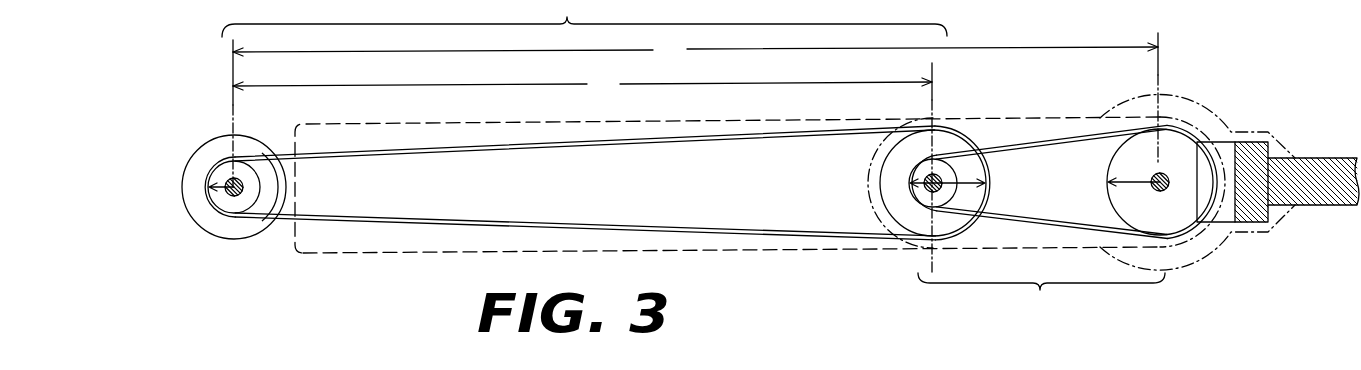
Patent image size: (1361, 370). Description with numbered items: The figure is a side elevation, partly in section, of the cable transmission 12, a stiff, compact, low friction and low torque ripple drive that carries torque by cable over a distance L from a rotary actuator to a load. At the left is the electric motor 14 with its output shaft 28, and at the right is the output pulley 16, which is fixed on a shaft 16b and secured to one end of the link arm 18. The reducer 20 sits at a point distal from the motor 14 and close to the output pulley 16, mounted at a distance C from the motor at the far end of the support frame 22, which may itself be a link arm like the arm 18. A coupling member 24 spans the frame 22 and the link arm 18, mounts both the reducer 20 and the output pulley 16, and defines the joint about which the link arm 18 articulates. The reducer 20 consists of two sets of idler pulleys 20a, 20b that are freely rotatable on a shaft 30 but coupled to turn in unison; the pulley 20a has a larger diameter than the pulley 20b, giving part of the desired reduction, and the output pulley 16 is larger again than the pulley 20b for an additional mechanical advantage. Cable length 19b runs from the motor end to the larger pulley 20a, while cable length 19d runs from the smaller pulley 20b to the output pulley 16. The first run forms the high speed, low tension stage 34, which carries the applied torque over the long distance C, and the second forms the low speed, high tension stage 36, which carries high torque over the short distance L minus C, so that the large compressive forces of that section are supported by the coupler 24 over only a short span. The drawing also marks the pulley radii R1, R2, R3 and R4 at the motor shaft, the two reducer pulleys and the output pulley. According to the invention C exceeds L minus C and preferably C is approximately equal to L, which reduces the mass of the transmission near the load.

The cable transmission 12 is at (605, 255).
The electric motor 14 is at (204, 145).
The output pulley 16 is at (1172, 150).
The shaft 16b is at (1168, 192).
The link arm 18 is at (1325, 158).
The cable length 19b is at (447, 217).
The cable length 19d is at (1046, 225).
The reducer 20 is at (1045, 105).
The idler pulley 20a is at (950, 142).
The idler pulley 20b is at (960, 186).
The support frame 22 is at (398, 123).
The coupling member 24 is at (895, 125).
The output shaft 28 is at (249, 162).
The shaft 30 is at (926, 178).
The high speed, low tension stage 34 is at (584, 18).
The low speed, high tension stage 36 is at (1041, 291).
The distance L is at (695, 110).
The distance C is at (582, 83).
The radius of first pulley R1 is at (222, 190).
The radius of large pulley portion R2 is at (985, 178).
The radius of small pulley portion R3 is at (911, 197).
The radius of third pulley R4 is at (1118, 180).